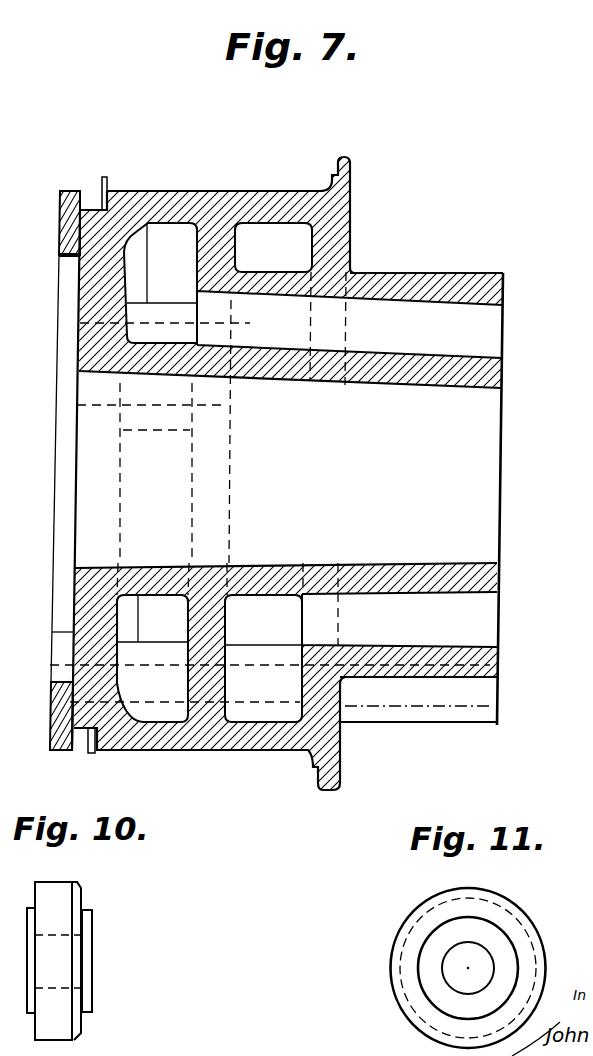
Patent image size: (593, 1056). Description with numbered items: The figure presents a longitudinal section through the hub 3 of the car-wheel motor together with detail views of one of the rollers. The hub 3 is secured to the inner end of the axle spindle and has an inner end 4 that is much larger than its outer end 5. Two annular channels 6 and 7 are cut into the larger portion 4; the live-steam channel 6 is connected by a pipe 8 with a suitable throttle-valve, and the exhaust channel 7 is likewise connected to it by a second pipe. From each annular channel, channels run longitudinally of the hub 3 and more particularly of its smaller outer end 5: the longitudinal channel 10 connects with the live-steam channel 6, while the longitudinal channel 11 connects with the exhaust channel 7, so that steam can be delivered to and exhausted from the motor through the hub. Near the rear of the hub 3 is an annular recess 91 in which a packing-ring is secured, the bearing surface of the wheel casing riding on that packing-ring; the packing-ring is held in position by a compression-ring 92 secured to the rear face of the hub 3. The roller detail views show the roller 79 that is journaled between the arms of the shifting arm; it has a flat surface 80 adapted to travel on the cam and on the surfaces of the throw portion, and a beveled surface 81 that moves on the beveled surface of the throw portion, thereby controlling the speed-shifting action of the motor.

In FIG. 7, the hub 3 is at (503, 467).
In FIG. 7, the inner end of hub 4 is at (210, 191).
In FIG. 7, the outer end of hub 5 is at (423, 273).
In FIG. 7, the live-steam annular channel 6 is at (268, 472).
In FIG. 7, the exhaust annular channel 7 is at (157, 472).
In FIG. 7, the pipe 8 is at (125, 323).
In FIG. 7, the longitudinal live-steam channel 10 is at (399, 619).
In FIG. 7, the longitudinal exhaust channel 11 is at (350, 324).
In FIG. 7, the annular recess 91 is at (104, 179).
In FIG. 7, the compression-ring 92 is at (60, 215).
In FIG. 10, the roller 79 is at (58, 961).
In FIG. 11, the roller 79 is at (392, 966).
In FIG. 10, the flat surface of roller 80 is at (56, 890).
In FIG. 11, the flat surface of roller 80 is at (476, 892).
In FIG. 10, the beveled surface of roller 81 is at (80, 891).
In FIG. 11, the beveled surface of roller 81 is at (534, 944).